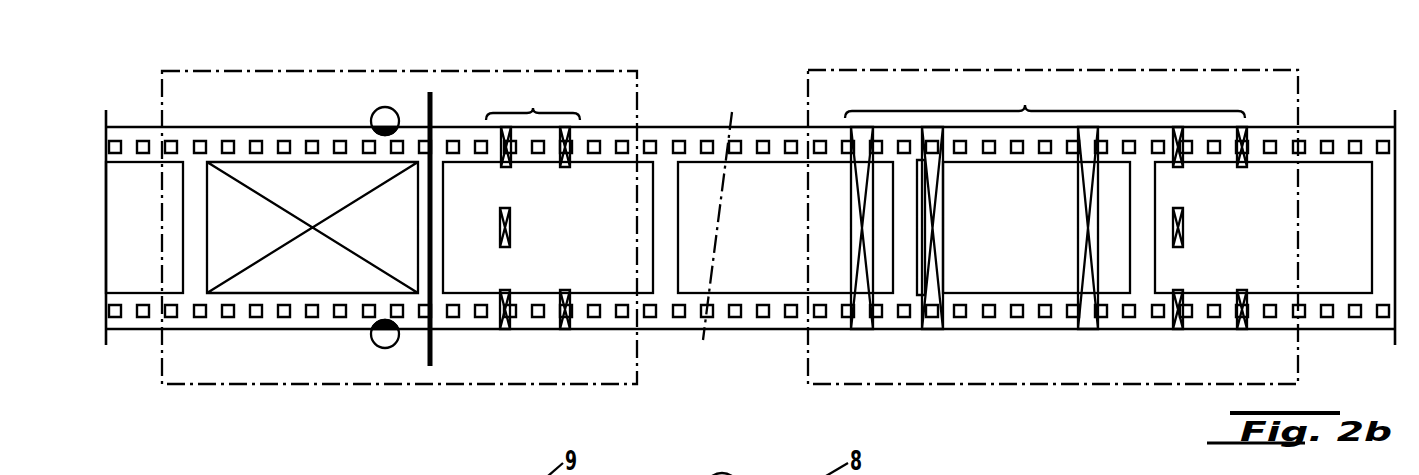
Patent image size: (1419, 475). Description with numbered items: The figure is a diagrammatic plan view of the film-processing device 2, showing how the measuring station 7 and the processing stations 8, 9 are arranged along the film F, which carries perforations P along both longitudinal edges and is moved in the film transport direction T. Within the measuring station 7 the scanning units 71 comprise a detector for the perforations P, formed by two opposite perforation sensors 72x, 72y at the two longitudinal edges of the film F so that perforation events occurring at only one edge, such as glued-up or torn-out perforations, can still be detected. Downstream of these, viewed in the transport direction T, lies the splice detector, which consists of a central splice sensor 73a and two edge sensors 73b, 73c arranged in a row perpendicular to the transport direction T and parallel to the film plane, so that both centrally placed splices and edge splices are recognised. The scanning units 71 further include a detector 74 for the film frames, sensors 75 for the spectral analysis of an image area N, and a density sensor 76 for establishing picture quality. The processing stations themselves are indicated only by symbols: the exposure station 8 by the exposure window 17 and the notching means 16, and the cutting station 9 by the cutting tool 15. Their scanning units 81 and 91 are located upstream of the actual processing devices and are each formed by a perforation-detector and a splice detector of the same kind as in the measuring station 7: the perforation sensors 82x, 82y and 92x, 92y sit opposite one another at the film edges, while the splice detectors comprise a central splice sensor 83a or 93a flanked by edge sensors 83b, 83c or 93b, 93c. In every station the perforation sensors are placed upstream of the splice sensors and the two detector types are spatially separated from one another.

The device for processing photographic film 2 is at (750, 234).
The measuring station 7 is at (1207, 64).
The exposure station 8 is at (419, 206).
The cutting station 9 is at (596, 66).
The cutting tool 15 is at (433, 98).
The notching means 16 is at (375, 110).
The exposure window 17 is at (280, 273).
The scanning units 71 is at (1060, 224).
The perforation sensor 72x is at (1245, 163).
The perforation sensor 72y is at (1241, 290).
The central splice sensor 73a is at (1177, 248).
The edge sensor 73b is at (1177, 160).
The edge sensor 73c is at (1177, 331).
The detector for the film frames 74 is at (1079, 222).
The sensors for spectral analysis 75 is at (936, 232).
The density sensor 76 is at (860, 322).
The scanning units 81 is at (604, 140).
The scanning units 91 is at (604, 140).
The perforation sensor 82x is at (656, 122).
The perforation sensor 82y is at (658, 333).
The perforation sensor 92x is at (571, 141).
The perforation sensor 92y is at (566, 331).
The central splice sensor 83a is at (504, 247).
The edge sensor 83b is at (503, 165).
The edge sensor 83c is at (513, 332).
The central splice sensor 93a is at (502, 224).
The edge sensor 93b is at (501, 148).
The edge sensor 93c is at (505, 330).
The film F is at (142, 120).
The image area N is at (998, 285).
The perforations P is at (146, 314).
The film transport direction T is at (737, 230).